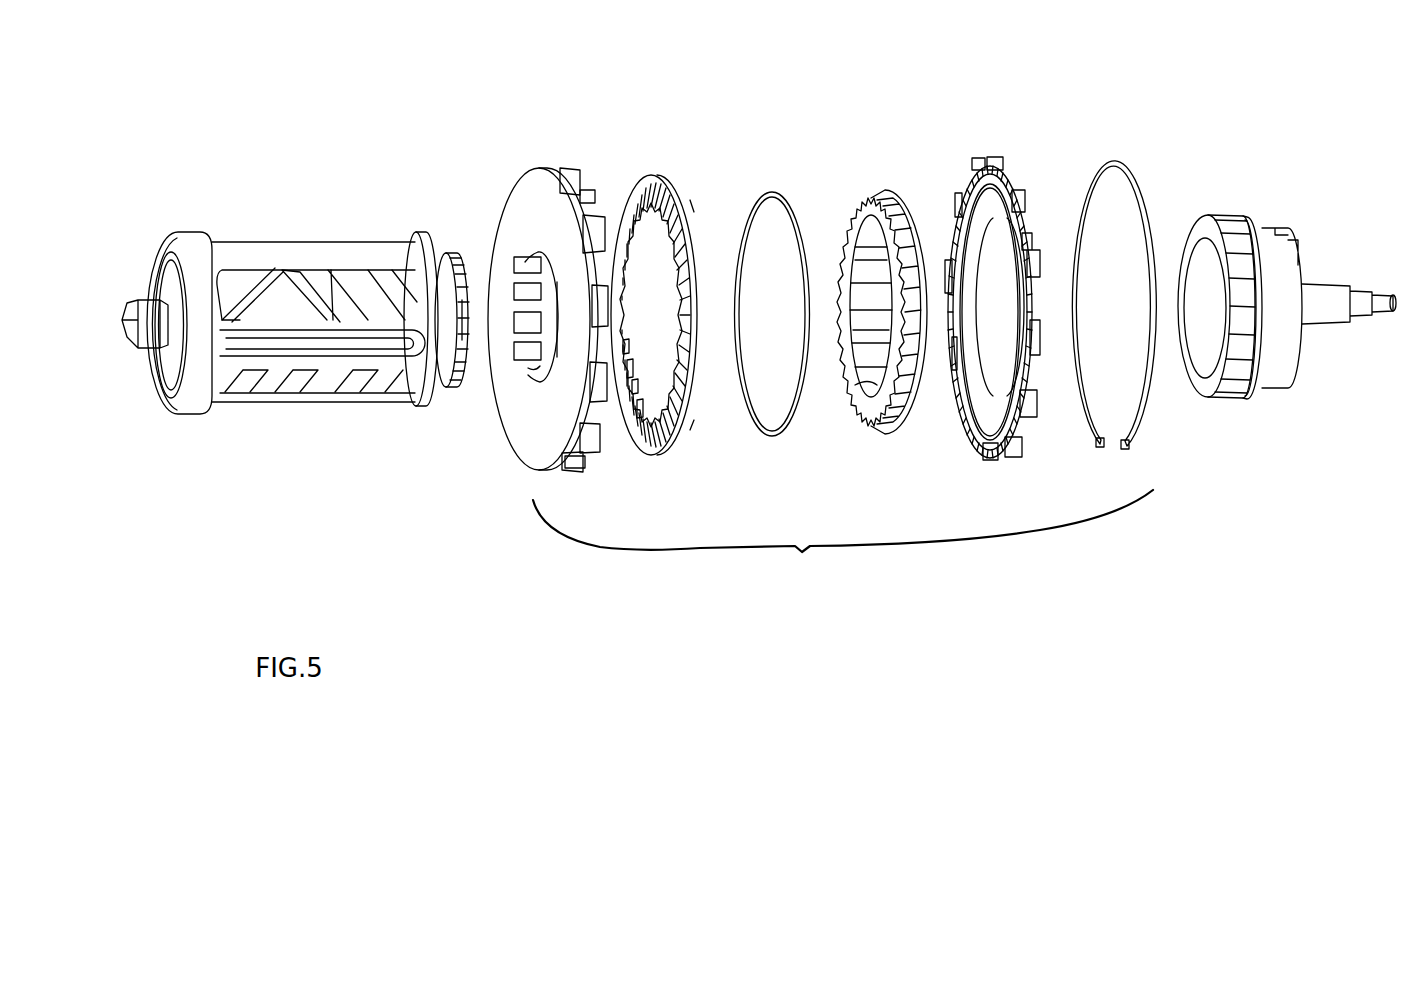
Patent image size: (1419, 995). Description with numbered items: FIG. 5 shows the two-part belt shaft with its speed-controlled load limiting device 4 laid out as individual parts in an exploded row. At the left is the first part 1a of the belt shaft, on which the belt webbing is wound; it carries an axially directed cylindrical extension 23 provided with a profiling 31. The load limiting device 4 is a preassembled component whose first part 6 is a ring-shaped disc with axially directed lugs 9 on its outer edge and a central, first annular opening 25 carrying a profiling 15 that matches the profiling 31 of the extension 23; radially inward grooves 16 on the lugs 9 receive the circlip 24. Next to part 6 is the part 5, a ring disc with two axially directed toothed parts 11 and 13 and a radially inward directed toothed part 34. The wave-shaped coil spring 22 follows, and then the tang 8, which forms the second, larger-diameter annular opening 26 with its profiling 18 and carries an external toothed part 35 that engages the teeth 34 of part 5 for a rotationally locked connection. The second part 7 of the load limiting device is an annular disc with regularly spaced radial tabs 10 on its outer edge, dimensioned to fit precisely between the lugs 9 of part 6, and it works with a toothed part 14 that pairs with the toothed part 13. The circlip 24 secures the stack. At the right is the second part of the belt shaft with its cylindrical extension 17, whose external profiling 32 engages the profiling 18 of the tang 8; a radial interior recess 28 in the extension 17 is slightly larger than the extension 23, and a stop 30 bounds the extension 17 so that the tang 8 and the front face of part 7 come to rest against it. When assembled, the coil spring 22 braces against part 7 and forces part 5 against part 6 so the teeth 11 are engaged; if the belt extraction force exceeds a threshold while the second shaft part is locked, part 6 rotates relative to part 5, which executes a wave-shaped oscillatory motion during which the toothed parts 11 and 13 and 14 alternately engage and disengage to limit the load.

The first part of the belt shaft 1a is at (315, 247).
The load limiting device 4 is at (843, 543).
The part in the form of a ring disc 5 is at (670, 185).
The first part of the load limiting device 6 is at (532, 190).
The second part of the load limiting device 7 is at (1012, 182).
The tang 8 is at (897, 205).
The lugs 9 is at (578, 182).
The radial tabs 10 is at (1009, 155).
The toothed part 11 is at (642, 177).
The toothed part 13 is at (680, 214).
The toothed part 14 is at (985, 166).
The profiling 15 is at (538, 360).
The radial inward grooves 16 is at (583, 205).
The cylindrical extension 17 is at (1222, 212).
The profiling 18 is at (877, 367).
The wave-shaped coil spring 22 is at (769, 193).
The cylindrical extension 23 is at (470, 372).
The circlip 24 is at (1115, 167).
The first central annular opening 25 is at (542, 315).
The second annular opening 26 is at (883, 287).
The radial interior recess 28 is at (1223, 343).
The stop 30 is at (1243, 398).
The profiling 31 is at (451, 262).
The external profiling 32 is at (1220, 397).
The toothed part 34 is at (628, 317).
The toothed part 35 is at (867, 202).